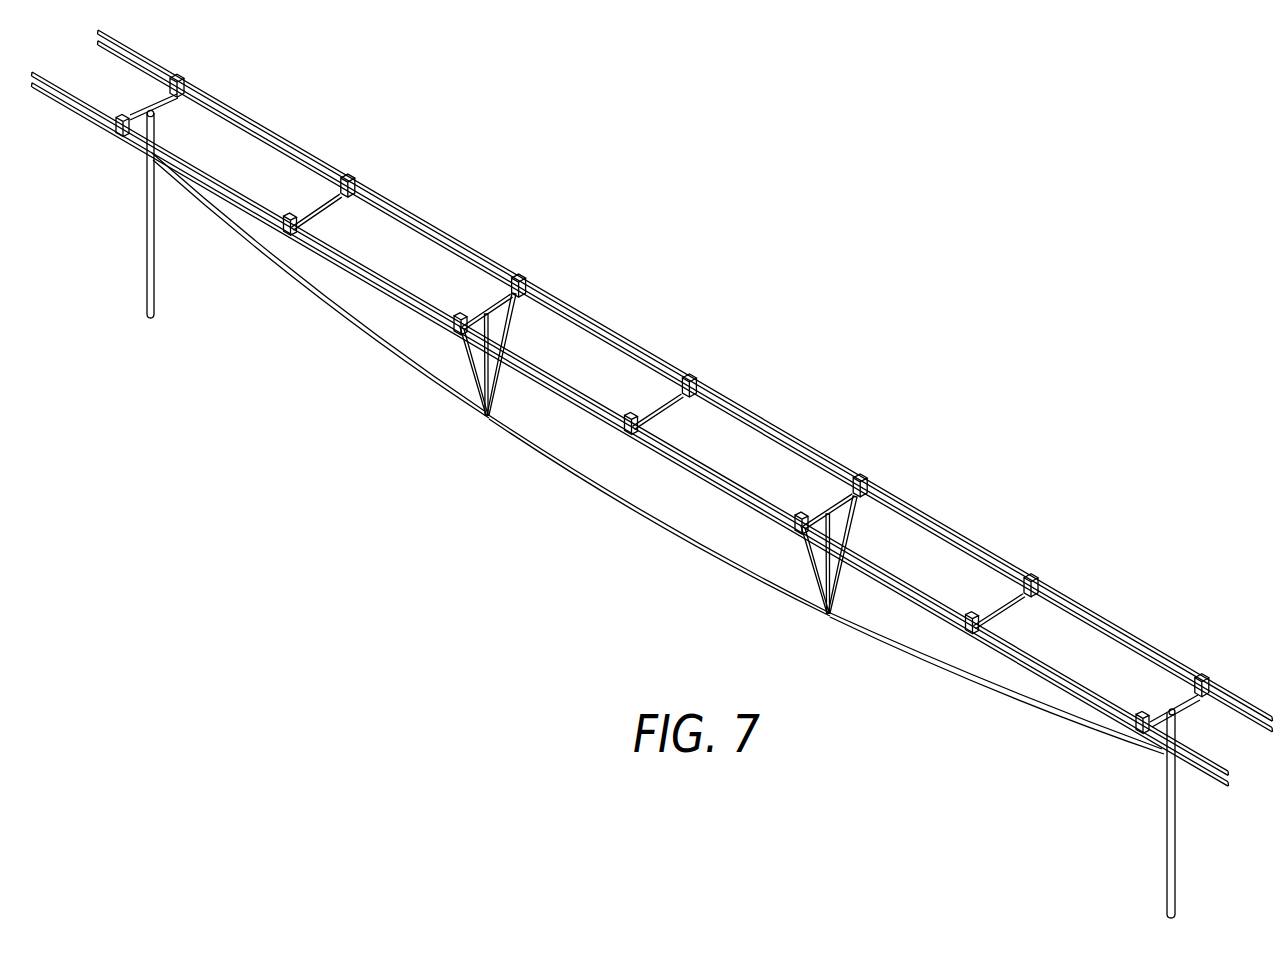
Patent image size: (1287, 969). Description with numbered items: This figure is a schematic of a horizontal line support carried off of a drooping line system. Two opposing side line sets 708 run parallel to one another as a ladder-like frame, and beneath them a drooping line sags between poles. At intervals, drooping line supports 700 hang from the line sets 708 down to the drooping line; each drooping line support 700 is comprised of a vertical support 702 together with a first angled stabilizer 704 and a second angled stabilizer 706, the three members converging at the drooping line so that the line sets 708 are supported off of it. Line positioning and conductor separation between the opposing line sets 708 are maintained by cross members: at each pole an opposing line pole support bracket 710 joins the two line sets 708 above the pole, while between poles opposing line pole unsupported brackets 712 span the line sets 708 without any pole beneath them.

The drooping line support 700 is at (503, 387).
The vertical support 702 is at (483, 366).
The first angled stabilizer 704 is at (478, 395).
The second angled stabilizer 706 is at (498, 398).
The opposing side line set 708 is at (685, 487).
The opposing line pole support bracket 710 is at (1179, 704).
The opposing line pole unsupported bracket 712 is at (1010, 603).